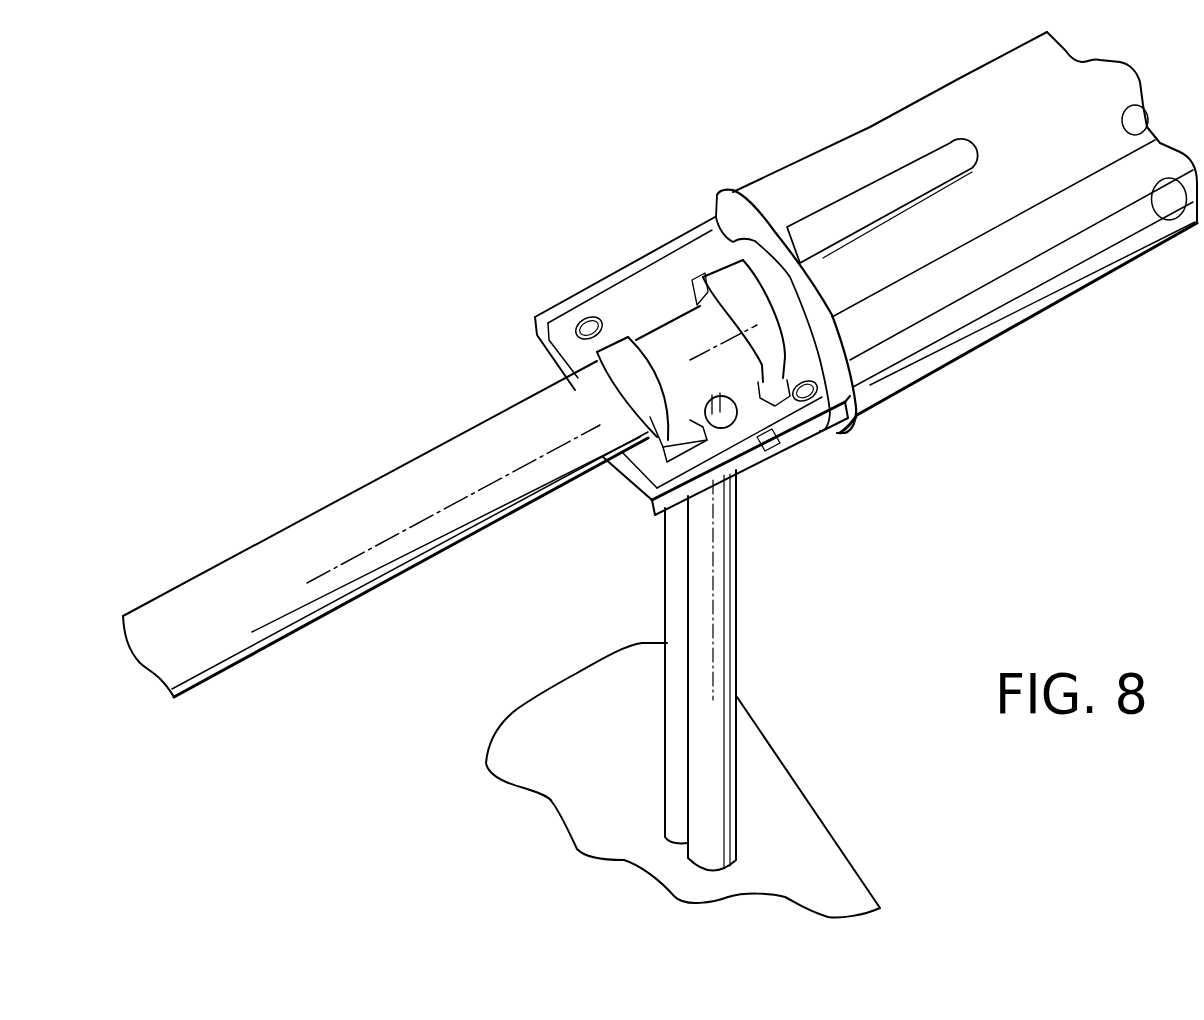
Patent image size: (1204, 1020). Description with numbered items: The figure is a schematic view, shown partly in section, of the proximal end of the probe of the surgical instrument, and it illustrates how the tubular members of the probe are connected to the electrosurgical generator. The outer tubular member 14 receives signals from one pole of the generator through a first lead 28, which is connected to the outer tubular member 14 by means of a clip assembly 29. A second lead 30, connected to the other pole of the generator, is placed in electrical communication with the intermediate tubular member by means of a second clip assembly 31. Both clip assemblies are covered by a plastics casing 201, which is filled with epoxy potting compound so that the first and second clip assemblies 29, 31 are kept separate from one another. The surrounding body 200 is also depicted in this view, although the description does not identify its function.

The outer tubular member 14 is at (320, 520).
The first lead 28 is at (668, 587).
The clip assembly 29 is at (600, 348).
The second lead 30 is at (720, 585).
The second clip assembly 31 is at (776, 354).
The housing 200 is at (1027, 307).
The plastics casing 201 is at (648, 299).